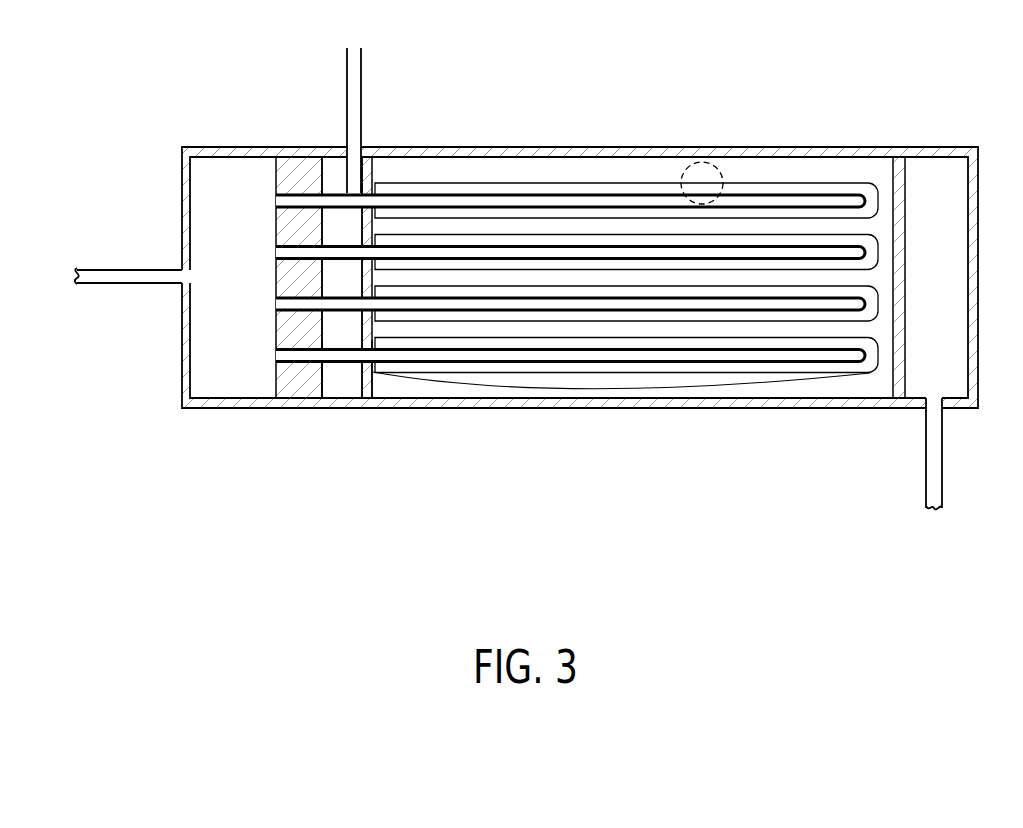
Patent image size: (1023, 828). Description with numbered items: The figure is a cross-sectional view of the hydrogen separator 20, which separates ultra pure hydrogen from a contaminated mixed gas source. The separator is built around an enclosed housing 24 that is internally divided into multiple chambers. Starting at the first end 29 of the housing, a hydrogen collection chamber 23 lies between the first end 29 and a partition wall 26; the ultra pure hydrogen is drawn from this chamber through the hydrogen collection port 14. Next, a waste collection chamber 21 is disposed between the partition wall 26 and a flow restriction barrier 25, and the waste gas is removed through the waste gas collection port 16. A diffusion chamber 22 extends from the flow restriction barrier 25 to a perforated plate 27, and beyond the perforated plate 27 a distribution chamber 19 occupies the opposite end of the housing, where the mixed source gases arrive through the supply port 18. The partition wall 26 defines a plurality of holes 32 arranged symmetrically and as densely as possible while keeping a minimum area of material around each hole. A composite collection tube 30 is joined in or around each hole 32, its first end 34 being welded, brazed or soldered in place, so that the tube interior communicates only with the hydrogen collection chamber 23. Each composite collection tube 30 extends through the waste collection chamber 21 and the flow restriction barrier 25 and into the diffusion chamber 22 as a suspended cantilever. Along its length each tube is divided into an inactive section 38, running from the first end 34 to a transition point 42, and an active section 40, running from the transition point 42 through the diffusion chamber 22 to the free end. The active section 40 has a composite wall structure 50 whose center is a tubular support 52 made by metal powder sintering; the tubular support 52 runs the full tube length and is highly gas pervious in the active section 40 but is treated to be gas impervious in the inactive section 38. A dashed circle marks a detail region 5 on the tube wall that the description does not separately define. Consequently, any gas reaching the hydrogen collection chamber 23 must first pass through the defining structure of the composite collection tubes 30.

The sensor location 5 is at (722, 172).
The hydrogen collection port 14 is at (120, 268).
The waste gas collection port 16 is at (362, 100).
The supply port 18 is at (942, 435).
The distribution chamber 19 is at (945, 350).
The hydrogen separator 20 is at (598, 82).
The waste collection chamber 21 is at (352, 386).
The diffusion chamber 22 is at (522, 169).
The hydrogen collection chamber 23 is at (222, 372).
The enclosed housing 24 is at (417, 147).
The flow restriction barrier 25 is at (372, 180).
The partition wall 26 is at (300, 178).
The perforated plate 27 is at (905, 193).
The first end 29 is at (190, 357).
The composite collection tubes 30 is at (779, 181).
The holes 32 is at (276, 265).
The first end 34 is at (276, 202).
The inactive section 38 is at (363, 338).
The active section 40 is at (566, 388).
The transition point 42 is at (373, 368).
The composite wall structure 50 is at (642, 190).
The tubular support 52 is at (337, 360).